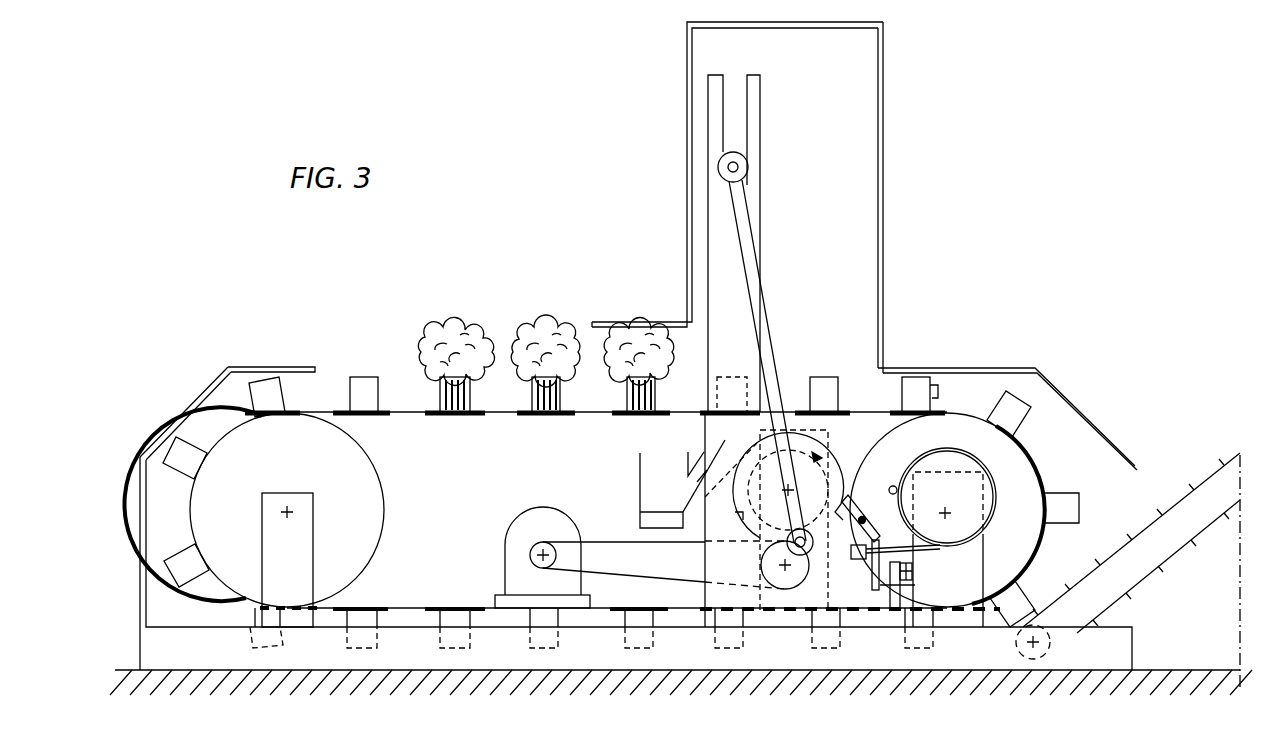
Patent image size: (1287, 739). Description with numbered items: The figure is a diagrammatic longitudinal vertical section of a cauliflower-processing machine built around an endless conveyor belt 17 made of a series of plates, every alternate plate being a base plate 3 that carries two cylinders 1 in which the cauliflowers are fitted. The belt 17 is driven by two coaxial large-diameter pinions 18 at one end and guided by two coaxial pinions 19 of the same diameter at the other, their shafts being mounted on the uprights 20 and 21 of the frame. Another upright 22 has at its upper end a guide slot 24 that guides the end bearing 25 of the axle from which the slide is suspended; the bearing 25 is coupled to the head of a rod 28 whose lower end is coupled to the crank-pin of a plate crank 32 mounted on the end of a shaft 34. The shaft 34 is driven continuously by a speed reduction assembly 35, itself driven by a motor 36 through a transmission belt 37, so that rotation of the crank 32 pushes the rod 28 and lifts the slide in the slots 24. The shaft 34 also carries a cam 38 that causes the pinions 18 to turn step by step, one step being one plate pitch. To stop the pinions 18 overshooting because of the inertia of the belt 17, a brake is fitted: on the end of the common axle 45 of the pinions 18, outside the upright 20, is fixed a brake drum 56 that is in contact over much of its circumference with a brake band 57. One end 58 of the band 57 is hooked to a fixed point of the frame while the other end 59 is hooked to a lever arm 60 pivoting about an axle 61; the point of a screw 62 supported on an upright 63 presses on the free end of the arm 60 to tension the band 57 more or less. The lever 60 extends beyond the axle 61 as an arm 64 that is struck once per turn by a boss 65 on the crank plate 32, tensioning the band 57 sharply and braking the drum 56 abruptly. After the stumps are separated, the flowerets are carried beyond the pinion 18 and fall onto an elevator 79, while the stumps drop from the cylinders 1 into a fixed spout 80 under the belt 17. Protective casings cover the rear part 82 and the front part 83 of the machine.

The cylinder 1 is at (939, 392).
The base plate 3 is at (282, 412).
The endless conveyor belt 17 is at (408, 412).
The pinion 18 is at (1027, 470).
The pinion 19 is at (378, 510).
The upright 20 is at (979, 582).
The upright 21 is at (312, 552).
The upright 22 is at (720, 262).
The guide slot 24 is at (740, 115).
The end bearing 25 is at (748, 167).
The rod 28 is at (765, 319).
The plate crank 32 is at (834, 466).
The shaft 34 is at (732, 496).
The speed reduction assembly 35 is at (800, 582).
The motor 36 is at (548, 507).
The transmission belt 37 is at (700, 520).
The cam 38 is at (785, 490).
The axle 45 is at (947, 513).
The brake drum 56 is at (957, 458).
The brake band 57 is at (930, 550).
The end of brake band 58 is at (893, 486).
The end of brake band 59 is at (853, 559).
The lever arm 60 is at (879, 545).
The axle 61 is at (865, 521).
The screw 62 is at (913, 583).
The upright 63 is at (905, 586).
The arm 64 is at (848, 505).
The boss 65 is at (737, 518).
The elevator 79 is at (1136, 540).
The fixed spout 80 is at (688, 455).
The rear part 82 is at (883, 265).
The front part 83 is at (283, 368).